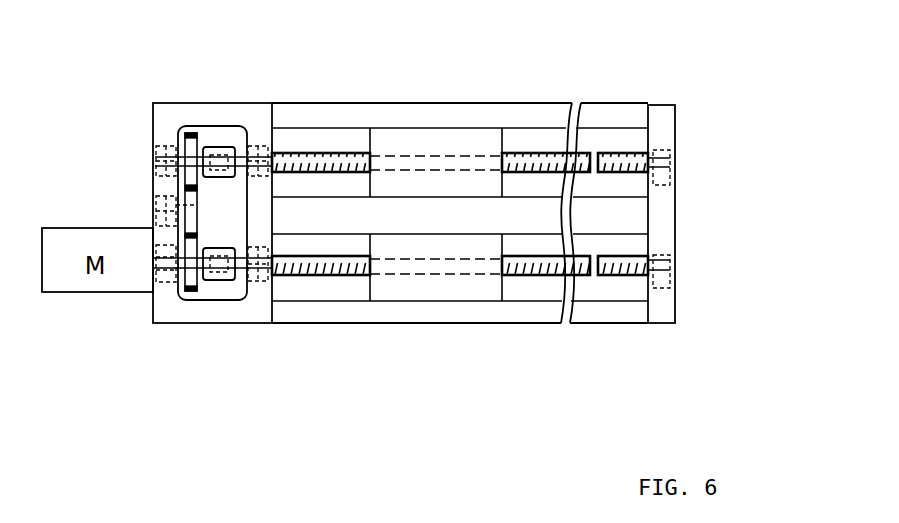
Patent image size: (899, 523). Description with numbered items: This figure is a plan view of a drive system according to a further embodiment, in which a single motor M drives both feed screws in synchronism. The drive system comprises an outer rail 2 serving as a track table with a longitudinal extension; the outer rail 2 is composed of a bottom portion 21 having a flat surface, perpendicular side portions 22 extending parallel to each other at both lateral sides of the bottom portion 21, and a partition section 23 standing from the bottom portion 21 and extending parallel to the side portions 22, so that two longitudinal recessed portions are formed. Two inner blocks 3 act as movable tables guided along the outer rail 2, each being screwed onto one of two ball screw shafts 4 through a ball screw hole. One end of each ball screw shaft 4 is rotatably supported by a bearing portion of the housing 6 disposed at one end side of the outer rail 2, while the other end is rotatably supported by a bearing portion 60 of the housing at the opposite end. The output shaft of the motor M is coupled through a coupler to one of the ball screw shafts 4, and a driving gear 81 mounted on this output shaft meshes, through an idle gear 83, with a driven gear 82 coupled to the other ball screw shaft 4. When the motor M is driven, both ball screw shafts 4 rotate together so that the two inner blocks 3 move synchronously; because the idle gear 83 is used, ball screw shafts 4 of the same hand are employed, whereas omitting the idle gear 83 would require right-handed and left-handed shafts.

The outer rail 2 is at (484, 101).
The bottom portion 21 is at (325, 137).
The side portions 22 is at (388, 116).
The inner blocks 3 is at (430, 138).
The ball screw shafts 4 is at (530, 155).
The housing 6 is at (659, 117).
The partition section 23 is at (623, 222).
The bearing portion 60 is at (253, 283).
The driving gear 81 is at (190, 292).
The driven gear 82 is at (183, 147).
The idle gear 83 is at (190, 200).